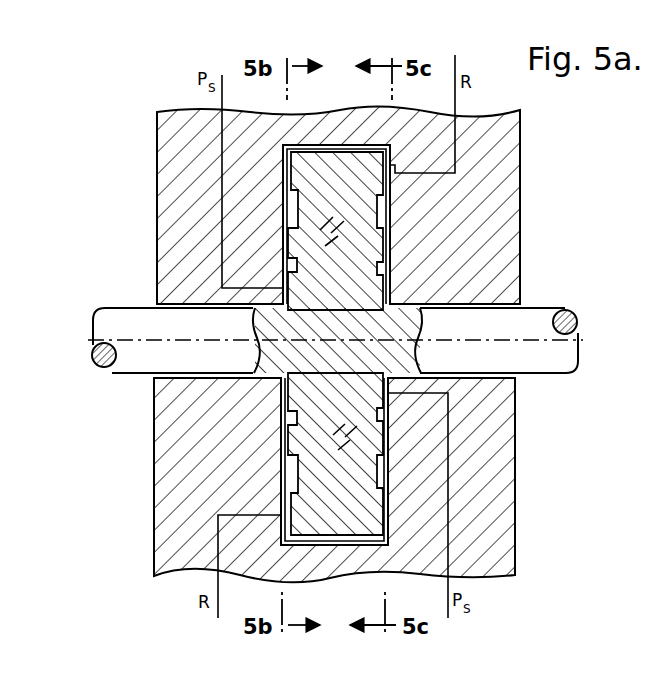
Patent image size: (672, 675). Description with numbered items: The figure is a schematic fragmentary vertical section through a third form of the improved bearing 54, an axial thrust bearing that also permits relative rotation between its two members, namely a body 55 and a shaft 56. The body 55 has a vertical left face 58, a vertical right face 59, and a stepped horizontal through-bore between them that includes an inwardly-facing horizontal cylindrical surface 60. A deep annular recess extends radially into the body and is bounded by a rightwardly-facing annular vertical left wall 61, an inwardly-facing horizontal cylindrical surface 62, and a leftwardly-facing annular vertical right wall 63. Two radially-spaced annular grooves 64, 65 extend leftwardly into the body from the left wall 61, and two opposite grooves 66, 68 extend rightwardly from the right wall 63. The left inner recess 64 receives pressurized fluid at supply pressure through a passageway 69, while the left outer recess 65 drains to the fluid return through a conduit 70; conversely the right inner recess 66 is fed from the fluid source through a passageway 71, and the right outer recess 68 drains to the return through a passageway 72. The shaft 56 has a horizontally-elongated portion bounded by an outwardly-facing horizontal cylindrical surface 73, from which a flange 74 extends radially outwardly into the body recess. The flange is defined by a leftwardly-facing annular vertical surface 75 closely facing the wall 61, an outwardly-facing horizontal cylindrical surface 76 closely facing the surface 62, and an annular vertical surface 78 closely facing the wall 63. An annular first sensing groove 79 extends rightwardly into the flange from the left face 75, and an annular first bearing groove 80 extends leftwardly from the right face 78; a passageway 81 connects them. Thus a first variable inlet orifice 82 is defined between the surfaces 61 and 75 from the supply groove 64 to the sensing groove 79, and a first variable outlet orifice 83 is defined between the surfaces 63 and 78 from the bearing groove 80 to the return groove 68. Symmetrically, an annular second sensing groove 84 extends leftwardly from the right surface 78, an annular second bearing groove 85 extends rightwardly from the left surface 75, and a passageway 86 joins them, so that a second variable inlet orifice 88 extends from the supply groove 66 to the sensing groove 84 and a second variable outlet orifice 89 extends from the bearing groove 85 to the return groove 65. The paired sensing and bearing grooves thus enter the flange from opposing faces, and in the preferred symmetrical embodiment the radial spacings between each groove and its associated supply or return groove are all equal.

The bearing 54 is at (130, 171).
The body 55 is at (524, 142).
The shaft 56 is at (539, 303).
The vertical left face 58 is at (154, 462).
The vertical right face 59 is at (518, 445).
The inwardly-facing horizontal cylindrical surface 60 is at (178, 310).
The recess left wall 61 is at (288, 213).
The inwardly-facing horizontal cylindrical surface 62 is at (350, 109).
The recess right wall 63 is at (393, 210).
The left inner recess 64 is at (291, 290).
The left outer recess 65 is at (284, 177).
The right inner recess 66 is at (392, 290).
The right outer recess 68 is at (394, 186).
The passageway 69 is at (220, 141).
The conduit 70 is at (218, 524).
The passageway 71 is at (448, 547).
The passageway 72 is at (456, 143).
The outwardly-facing horizontal cylindrical surface 73 is at (157, 297).
The flange 74 is at (345, 572).
The leftwardly-facing annular vertical surface 75 is at (282, 433).
The outwardly-facing horizontal cylindrical surface 76 is at (305, 546).
The annular vertical surface 78 is at (390, 445).
The first sensing groove 79 is at (300, 409).
The first bearing groove 80 is at (392, 476).
The passageway 81 is at (345, 265).
The first variable inlet orifice 82 is at (294, 285).
The first variable outlet orifice 83 is at (377, 189).
The second sensing groove 84 is at (384, 404).
The second bearing groove 85 is at (282, 474).
The passageway 86 is at (350, 473).
The second variable inlet orifice 88 is at (396, 402).
The second variable outlet orifice 89 is at (278, 497).